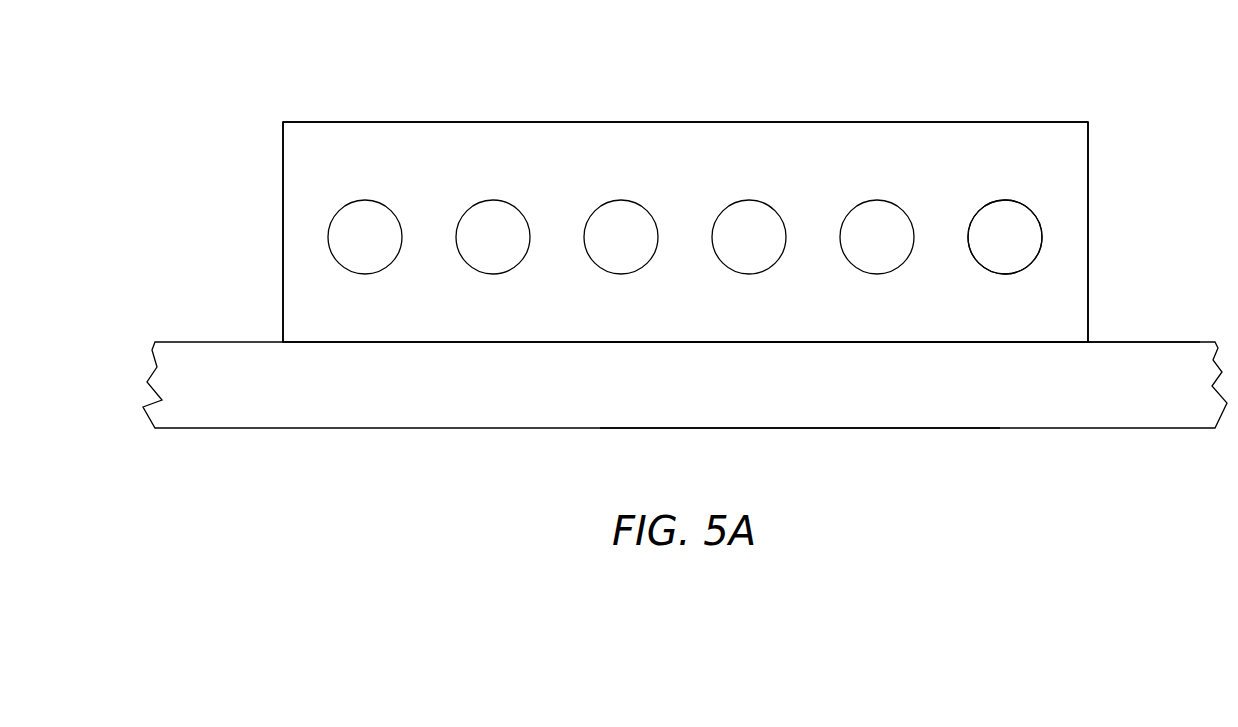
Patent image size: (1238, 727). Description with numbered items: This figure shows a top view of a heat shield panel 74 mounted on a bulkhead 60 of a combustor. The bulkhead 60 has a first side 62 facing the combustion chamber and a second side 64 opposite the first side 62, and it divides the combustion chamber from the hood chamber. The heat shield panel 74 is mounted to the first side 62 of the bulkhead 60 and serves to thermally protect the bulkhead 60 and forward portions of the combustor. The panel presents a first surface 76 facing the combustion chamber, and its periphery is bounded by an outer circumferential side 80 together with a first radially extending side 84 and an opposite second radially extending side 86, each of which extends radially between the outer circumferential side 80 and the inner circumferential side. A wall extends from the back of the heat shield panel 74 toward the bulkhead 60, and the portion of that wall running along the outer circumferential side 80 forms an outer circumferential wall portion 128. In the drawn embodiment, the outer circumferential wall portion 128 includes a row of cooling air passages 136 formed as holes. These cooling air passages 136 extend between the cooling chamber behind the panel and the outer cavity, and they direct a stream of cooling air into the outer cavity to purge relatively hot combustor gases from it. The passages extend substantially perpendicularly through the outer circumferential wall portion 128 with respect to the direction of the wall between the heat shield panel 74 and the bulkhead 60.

The bulkhead 60 is at (1050, 445).
The first side 62 is at (1148, 342).
The second side 64 is at (918, 430).
The heat shield panel 74 is at (1072, 88).
The first surface 76 is at (322, 120).
The outer circumferential side 80 is at (375, 157).
The first radially extending side 84 is at (1088, 200).
The second radially extending side 86 is at (283, 162).
The outer circumferential wall portion 128 is at (979, 172).
The cooling air passage 136 is at (572, 172).